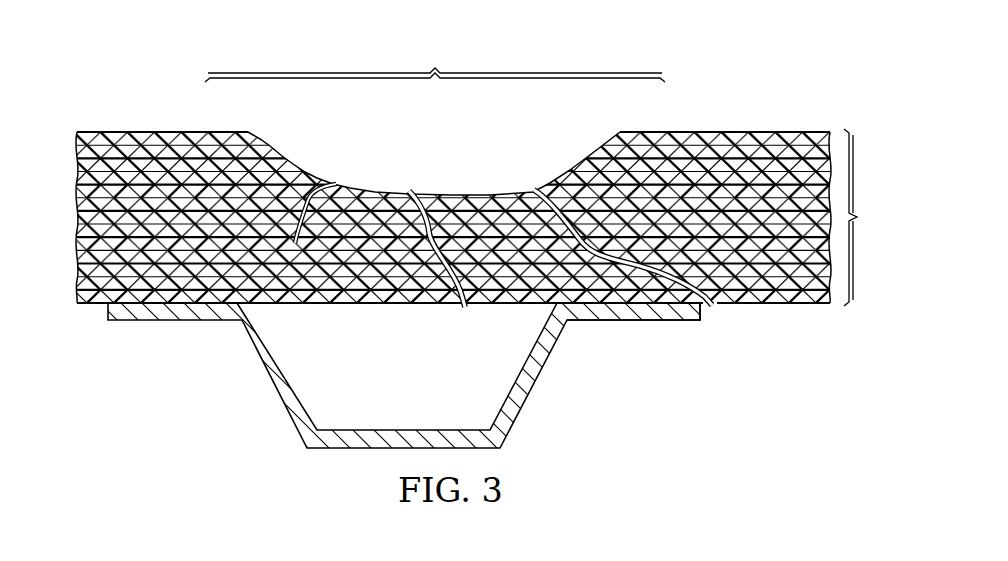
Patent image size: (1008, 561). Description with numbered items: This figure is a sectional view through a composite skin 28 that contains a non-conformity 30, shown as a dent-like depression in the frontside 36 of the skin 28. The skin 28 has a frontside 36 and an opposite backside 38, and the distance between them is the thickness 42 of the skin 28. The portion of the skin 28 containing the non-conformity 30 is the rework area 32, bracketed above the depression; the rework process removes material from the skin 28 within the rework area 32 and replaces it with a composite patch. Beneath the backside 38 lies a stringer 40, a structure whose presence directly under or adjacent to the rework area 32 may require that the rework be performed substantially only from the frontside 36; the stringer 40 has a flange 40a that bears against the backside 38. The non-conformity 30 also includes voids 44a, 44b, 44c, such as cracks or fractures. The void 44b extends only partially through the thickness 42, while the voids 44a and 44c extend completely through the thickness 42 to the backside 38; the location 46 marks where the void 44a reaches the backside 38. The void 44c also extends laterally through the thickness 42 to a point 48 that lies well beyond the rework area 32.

The skin 28 is at (75, 250).
The non-conformity 30 is at (470, 146).
The rework area 32 is at (435, 60).
The frontside 36 is at (139, 126).
The backside 38 is at (791, 315).
The stringer 40 is at (280, 376).
The flange of tool 40a is at (623, 312).
The thickness 42 is at (868, 217).
The void 44a is at (410, 190).
The void 44b is at (329, 182).
The void 44c is at (529, 188).
The fiber exit point 46 is at (467, 318).
The point 48 is at (727, 321).